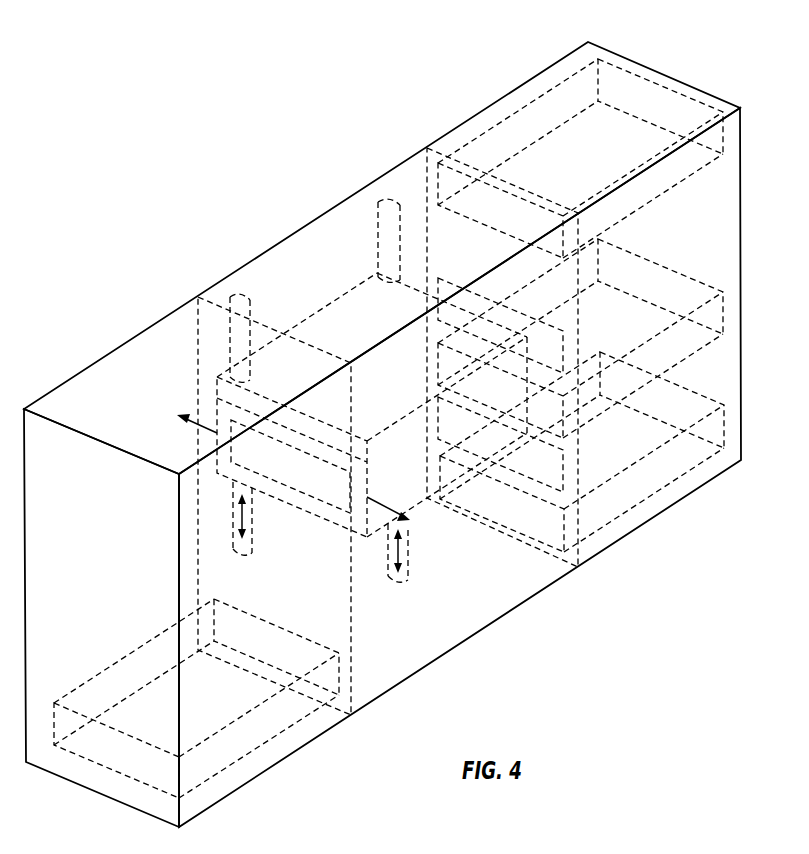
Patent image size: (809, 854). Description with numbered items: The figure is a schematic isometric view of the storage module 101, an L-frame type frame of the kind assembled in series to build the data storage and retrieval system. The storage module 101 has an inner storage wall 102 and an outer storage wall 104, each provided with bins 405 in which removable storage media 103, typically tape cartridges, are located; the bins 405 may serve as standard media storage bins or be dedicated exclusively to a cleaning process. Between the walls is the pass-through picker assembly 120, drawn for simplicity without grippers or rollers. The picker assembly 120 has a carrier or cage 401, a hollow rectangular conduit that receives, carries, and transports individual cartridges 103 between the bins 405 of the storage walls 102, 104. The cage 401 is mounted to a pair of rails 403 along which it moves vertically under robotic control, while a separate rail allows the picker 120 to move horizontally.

The storage module 101 is at (398, 155).
The inner storage wall 102 is at (720, 262).
The outer storage wall 104 is at (95, 388).
The carrier or cage 401 is at (374, 303).
The rails 403 is at (378, 205).
The bins 405 is at (606, 512).
The removable storage media 103 is at (320, 519).
The pass-through picker assembly 120 is at (426, 512).